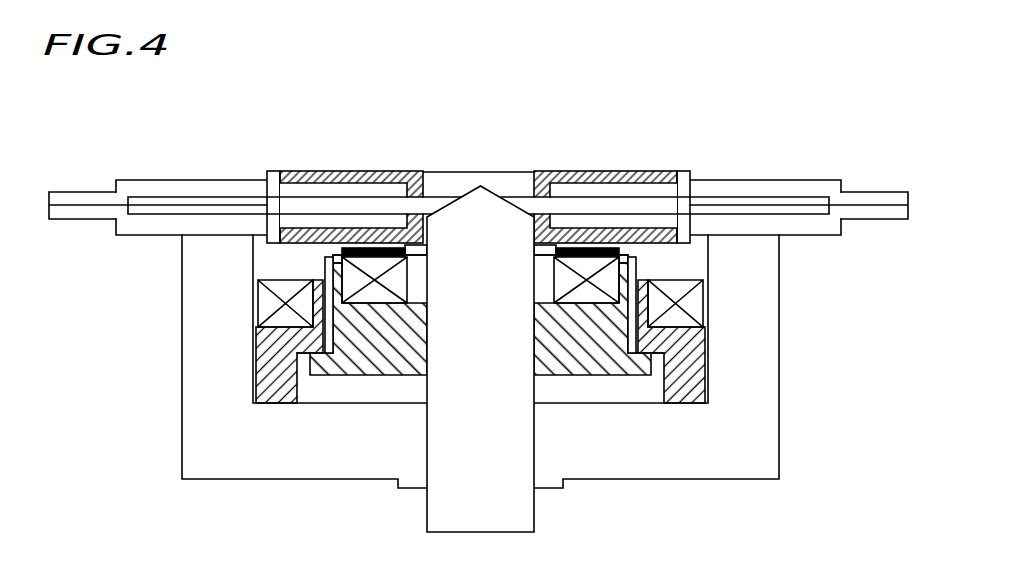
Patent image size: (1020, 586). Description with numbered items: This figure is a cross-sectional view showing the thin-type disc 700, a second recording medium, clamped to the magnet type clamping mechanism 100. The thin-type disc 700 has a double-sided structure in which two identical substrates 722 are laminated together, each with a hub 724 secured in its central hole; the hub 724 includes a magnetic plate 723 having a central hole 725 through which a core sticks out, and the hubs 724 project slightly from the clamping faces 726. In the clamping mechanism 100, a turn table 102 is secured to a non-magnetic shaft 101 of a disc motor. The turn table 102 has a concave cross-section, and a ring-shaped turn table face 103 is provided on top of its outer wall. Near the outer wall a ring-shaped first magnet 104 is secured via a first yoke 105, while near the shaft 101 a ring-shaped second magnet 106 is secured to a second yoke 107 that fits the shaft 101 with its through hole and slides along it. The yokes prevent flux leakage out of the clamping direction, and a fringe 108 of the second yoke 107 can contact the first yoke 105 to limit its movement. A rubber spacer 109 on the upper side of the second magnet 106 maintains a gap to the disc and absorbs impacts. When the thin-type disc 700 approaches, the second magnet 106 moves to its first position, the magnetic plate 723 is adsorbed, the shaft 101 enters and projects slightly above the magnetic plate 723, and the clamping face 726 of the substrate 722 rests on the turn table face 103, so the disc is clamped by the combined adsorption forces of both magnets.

The magnet type clamping mechanism 100 is at (517, 331).
The shaft 101 is at (493, 238).
The turn table 102 is at (763, 333).
The turn table face 103 is at (738, 230).
The first magnet 104 is at (693, 298).
The first yoke 105 is at (688, 372).
The second magnet 106 is at (607, 262).
The second yoke 107 is at (583, 358).
The fringe 108 is at (642, 368).
The spacer 109 is at (578, 247).
The thin-type disc 700 is at (478, 214).
The substrate 722 is at (124, 220).
The magnetic plate 723 is at (275, 182).
The hub 724 is at (327, 222).
The central hole 725 is at (435, 203).
The clamping face 726 is at (203, 237).